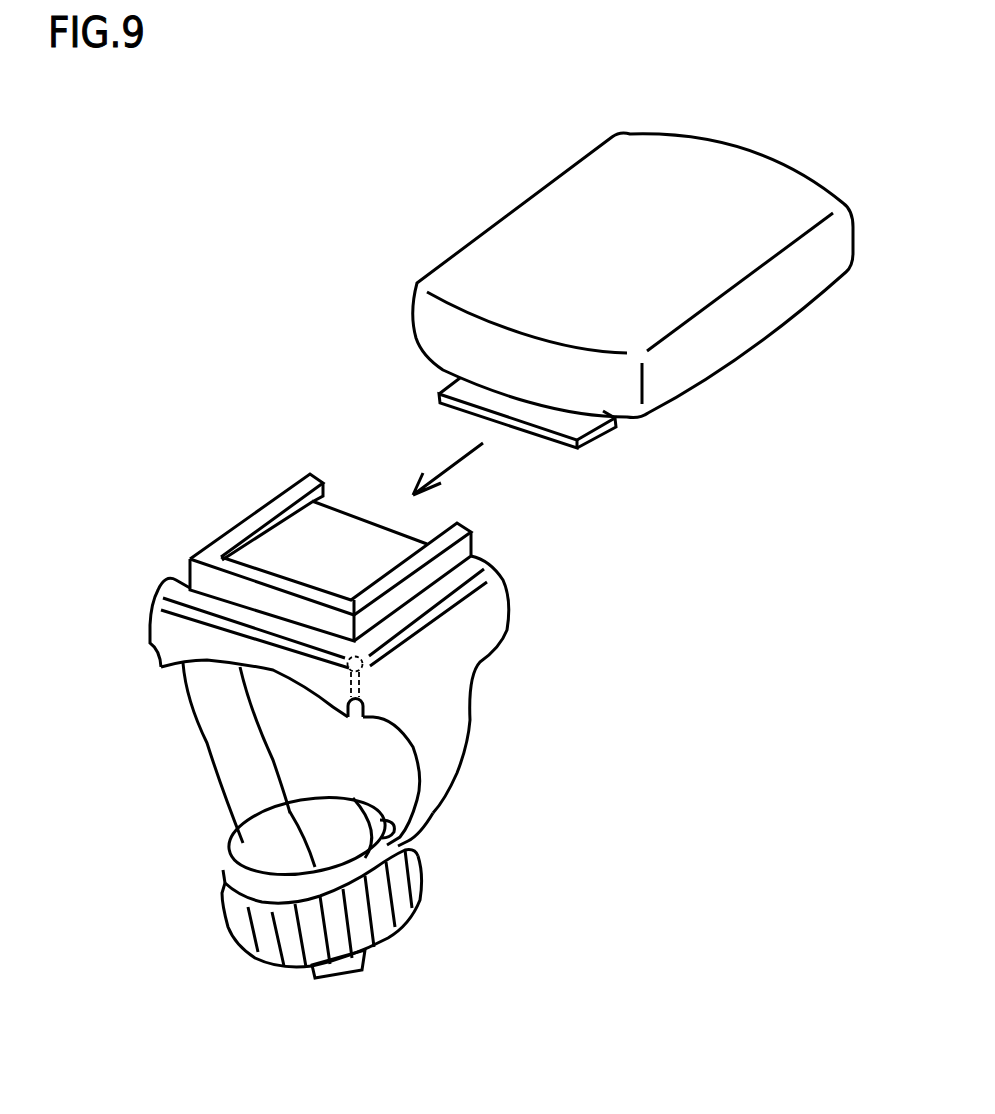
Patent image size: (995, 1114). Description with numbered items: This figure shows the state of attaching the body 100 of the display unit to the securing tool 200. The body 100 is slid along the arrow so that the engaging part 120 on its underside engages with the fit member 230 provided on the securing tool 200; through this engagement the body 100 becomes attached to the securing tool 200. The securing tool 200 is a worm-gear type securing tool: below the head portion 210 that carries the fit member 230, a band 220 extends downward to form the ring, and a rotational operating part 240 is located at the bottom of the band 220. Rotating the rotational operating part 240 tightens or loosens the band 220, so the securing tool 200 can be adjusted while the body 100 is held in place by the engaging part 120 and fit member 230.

The body 100 is at (519, 124).
The engaging part 120 is at (572, 425).
The securing tool 200 is at (125, 723).
The holder head 210 is at (458, 593).
The band 220 is at (450, 765).
The fit member 230 is at (263, 517).
The rotational operating part 240 is at (368, 933).